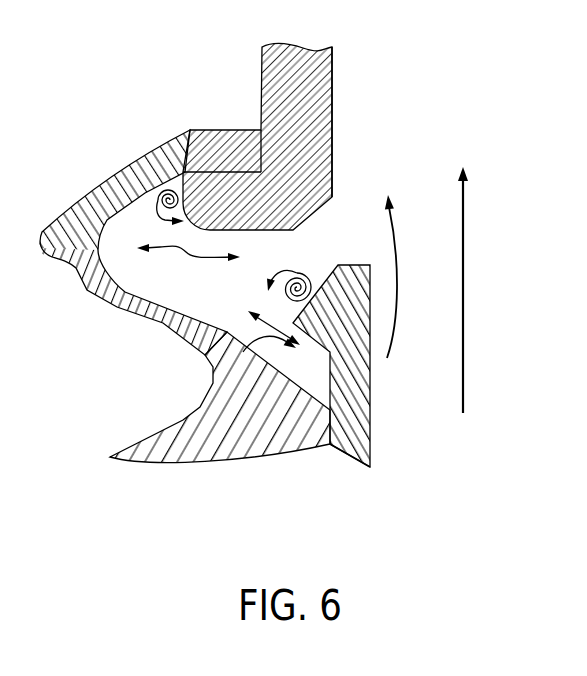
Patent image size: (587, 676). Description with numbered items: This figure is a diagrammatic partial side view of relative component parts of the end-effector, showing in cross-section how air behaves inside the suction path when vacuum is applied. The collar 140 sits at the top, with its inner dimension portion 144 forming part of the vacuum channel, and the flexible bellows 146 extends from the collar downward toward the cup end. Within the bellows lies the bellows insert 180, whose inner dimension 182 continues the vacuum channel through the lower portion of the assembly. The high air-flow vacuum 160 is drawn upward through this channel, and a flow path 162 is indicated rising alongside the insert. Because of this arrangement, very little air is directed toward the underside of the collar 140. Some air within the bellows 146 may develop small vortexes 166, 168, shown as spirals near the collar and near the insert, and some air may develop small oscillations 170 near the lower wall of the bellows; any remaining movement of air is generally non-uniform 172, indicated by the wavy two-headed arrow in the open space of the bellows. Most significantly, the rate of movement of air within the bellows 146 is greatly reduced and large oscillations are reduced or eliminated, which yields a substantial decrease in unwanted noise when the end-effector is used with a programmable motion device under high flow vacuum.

The collar 140 is at (278, 82).
The inner dimension portion 144 is at (332, 112).
The bellows 146 is at (112, 186).
The high air-flow vacuum 160 is at (465, 300).
The leakage flow path 162 is at (397, 303).
The small vortex 166 is at (158, 193).
The small vortex 168 is at (307, 262).
The small oscillations 170 is at (212, 368).
The non-uniform air movement 172 is at (170, 247).
The bellows insert 180 is at (350, 440).
The inner dimension 182 is at (372, 418).